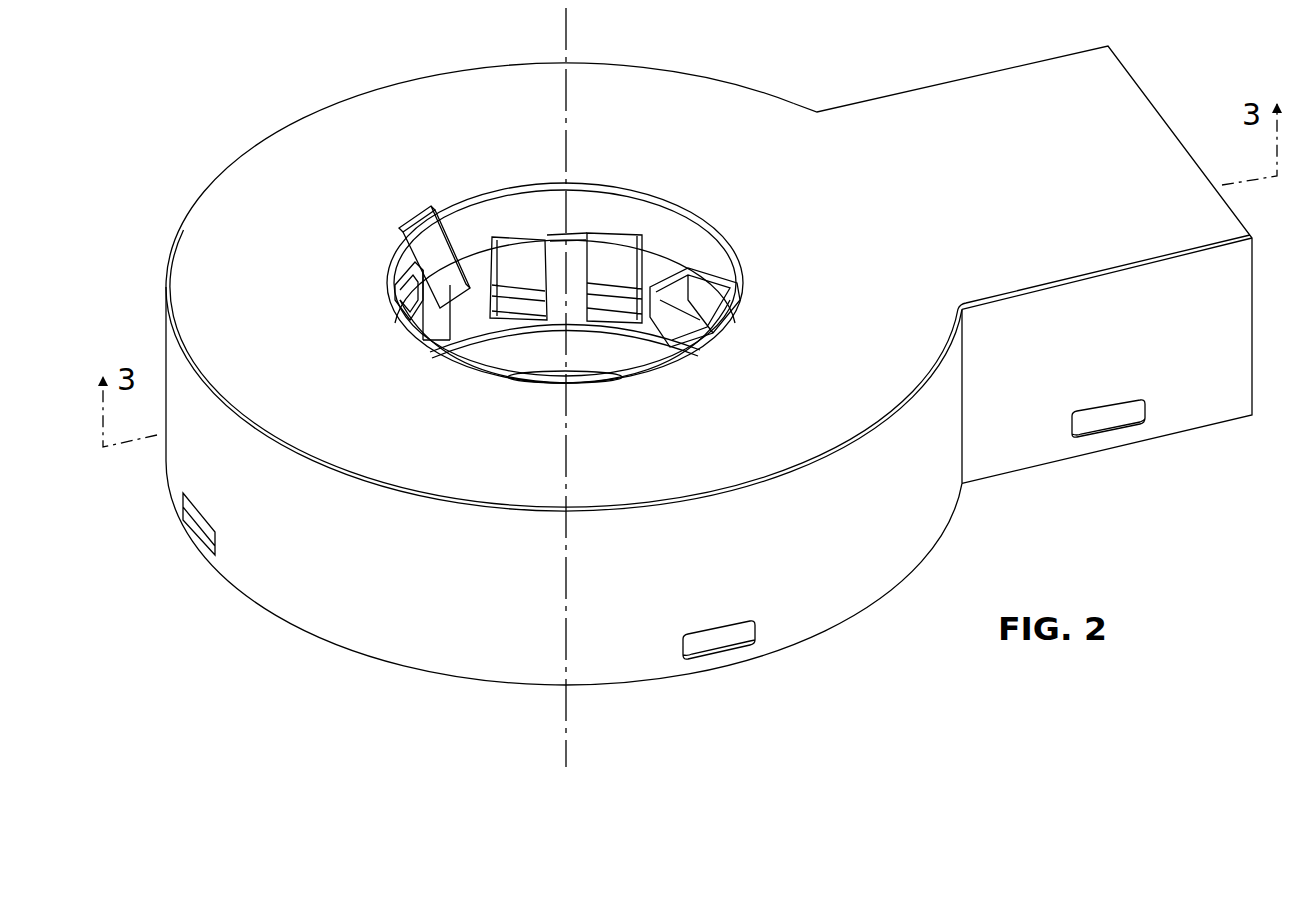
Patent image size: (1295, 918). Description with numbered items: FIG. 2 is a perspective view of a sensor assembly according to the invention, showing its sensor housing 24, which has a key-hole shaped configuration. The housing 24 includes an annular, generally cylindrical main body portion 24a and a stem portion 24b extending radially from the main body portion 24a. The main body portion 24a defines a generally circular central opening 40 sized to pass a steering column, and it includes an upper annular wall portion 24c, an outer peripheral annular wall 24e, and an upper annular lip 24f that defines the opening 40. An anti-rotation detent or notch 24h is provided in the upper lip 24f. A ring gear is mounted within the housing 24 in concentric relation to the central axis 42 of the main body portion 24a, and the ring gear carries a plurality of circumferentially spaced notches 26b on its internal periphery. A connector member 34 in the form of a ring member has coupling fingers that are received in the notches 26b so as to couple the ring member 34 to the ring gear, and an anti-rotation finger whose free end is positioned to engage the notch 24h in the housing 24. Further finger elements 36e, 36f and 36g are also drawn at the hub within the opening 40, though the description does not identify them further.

The sensor housing 24 is at (245, 76).
The main body portion 24a is at (235, 165).
The stem portion 24b is at (968, 78).
The upper annular wall portion 24c is at (212, 240).
The outer peripheral annular wall 24e is at (265, 582).
The upper annular lip 24f is at (672, 230).
The anti-rotation detent or notch 24h is at (433, 208).
The notches 26b is at (430, 333).
The connector member 34 is at (513, 228).
The finger 36e is at (487, 362).
The finger 36f is at (583, 232).
The finger 36g is at (582, 326).
The central opening 40 is at (573, 378).
The central axis 42 is at (566, 37).